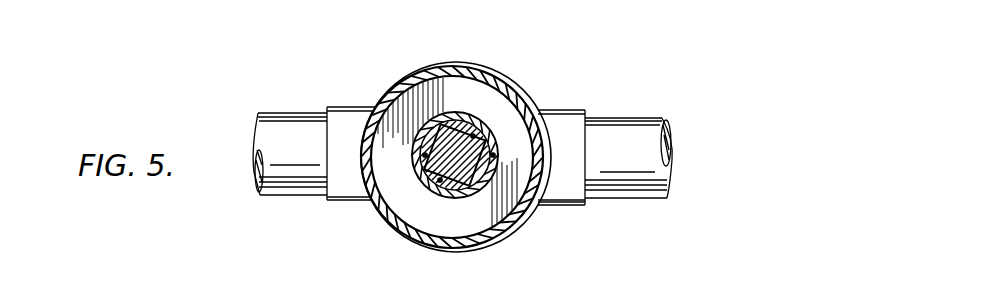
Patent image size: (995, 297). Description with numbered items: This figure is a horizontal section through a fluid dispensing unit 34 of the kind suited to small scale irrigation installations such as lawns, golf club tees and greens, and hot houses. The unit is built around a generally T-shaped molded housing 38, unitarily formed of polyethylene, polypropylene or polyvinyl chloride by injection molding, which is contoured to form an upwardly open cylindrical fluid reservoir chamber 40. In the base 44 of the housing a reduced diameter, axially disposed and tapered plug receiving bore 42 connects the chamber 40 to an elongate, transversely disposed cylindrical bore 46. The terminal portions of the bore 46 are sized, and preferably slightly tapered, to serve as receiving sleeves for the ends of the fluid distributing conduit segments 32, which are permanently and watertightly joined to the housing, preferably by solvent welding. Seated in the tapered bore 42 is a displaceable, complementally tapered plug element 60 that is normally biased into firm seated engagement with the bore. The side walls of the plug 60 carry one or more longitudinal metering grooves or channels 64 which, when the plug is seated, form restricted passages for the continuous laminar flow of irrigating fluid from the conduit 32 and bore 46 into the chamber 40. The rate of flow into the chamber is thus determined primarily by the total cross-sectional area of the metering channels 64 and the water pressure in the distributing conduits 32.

The fluid distributing conduit segments 32 is at (274, 130).
The fluid dispensing unit 34 is at (506, 71).
The housing 38 is at (393, 84).
The fluid reservoir chamber 40 is at (505, 205).
The plug receiving bore 42 is at (485, 136).
The base 44 is at (477, 220).
The transverse cylindrical bore 46 is at (575, 201).
The plug element 60 is at (440, 186).
The metering grooves 64 is at (425, 156).